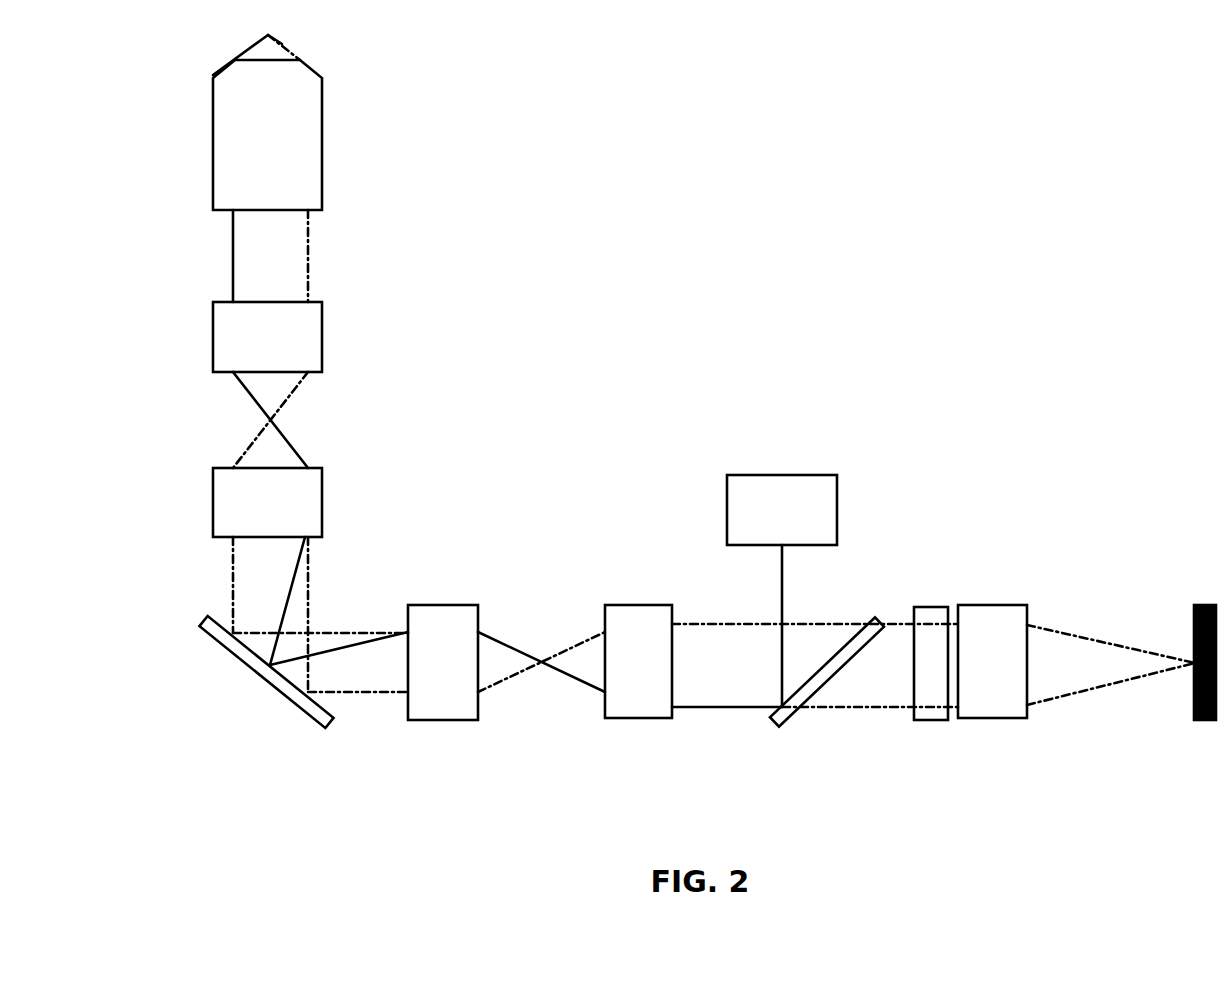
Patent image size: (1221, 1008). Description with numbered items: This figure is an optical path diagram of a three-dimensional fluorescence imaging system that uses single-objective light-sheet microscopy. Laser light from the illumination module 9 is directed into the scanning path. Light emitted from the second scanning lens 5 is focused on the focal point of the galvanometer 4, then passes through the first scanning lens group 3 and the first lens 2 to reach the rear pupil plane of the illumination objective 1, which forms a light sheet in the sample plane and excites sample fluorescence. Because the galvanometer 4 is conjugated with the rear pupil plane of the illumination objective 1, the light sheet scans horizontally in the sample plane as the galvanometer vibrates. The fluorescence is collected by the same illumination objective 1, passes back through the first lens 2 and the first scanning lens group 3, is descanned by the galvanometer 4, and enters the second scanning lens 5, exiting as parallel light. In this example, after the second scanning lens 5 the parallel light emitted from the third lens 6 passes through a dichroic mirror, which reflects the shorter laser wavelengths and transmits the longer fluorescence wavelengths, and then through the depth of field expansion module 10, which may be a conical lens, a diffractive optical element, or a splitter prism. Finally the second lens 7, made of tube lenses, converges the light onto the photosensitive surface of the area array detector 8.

The illumination objective 1 is at (235, 135).
The first lens 2 is at (235, 335).
The first scanning lens group 3 is at (235, 503).
The galvanometer 4 is at (233, 645).
The second scanning lens 5 is at (445, 692).
The third lens 6 is at (638, 692).
The second lens 7 is at (985, 690).
The detector 8 is at (1197, 720).
The illumination module 9 is at (803, 513).
The depth of field expansion module 10 is at (928, 690).